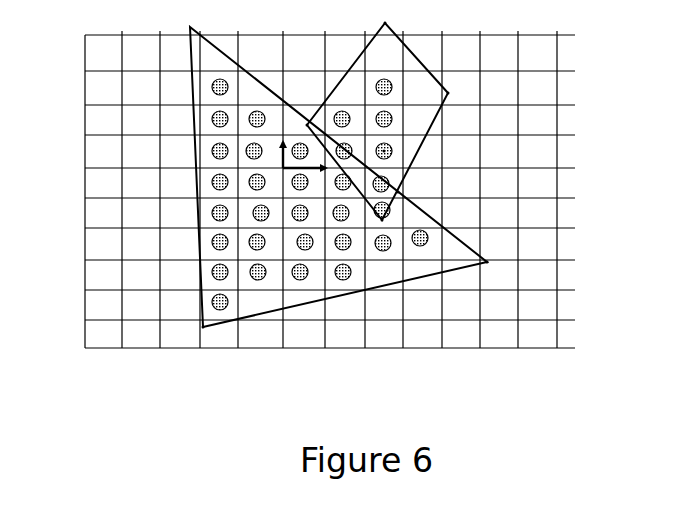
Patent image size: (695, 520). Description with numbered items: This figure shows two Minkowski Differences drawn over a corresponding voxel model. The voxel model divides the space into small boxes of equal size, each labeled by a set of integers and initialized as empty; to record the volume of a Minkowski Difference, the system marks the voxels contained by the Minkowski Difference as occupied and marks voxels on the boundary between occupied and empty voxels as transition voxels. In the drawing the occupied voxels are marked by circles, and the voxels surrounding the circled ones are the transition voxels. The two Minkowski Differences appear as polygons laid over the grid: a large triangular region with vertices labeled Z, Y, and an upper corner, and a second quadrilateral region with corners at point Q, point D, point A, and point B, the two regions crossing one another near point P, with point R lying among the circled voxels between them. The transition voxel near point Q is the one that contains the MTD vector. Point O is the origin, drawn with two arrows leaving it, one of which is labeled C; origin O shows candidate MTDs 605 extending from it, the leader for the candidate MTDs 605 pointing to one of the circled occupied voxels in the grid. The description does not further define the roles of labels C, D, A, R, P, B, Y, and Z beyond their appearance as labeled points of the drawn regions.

The candidate MTDs 605 is at (263, 153).
The origin O is at (297, 177).
The axis direction vector C is at (288, 142).
The vertex D is at (374, 27).
The vertex A is at (461, 96).
The point Q is at (307, 109).
The point R is at (381, 159).
The intersection point P is at (414, 195).
The vertex B is at (390, 235).
The vertex Y is at (505, 275).
The vertex Z is at (188, 325).